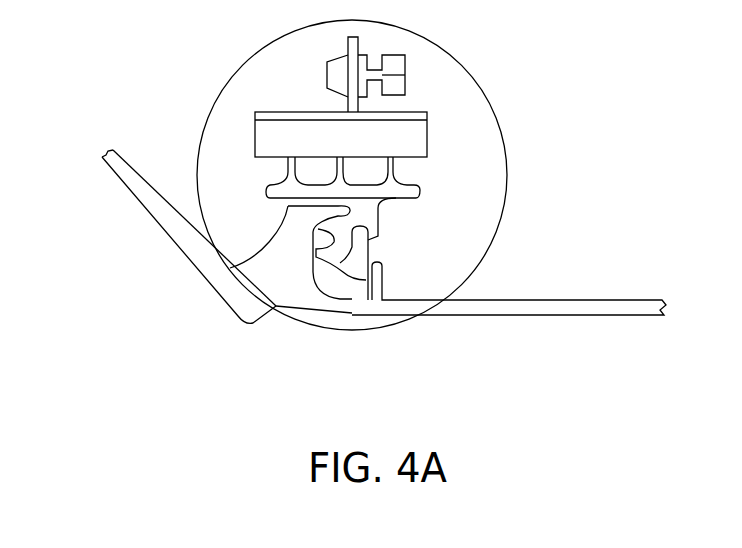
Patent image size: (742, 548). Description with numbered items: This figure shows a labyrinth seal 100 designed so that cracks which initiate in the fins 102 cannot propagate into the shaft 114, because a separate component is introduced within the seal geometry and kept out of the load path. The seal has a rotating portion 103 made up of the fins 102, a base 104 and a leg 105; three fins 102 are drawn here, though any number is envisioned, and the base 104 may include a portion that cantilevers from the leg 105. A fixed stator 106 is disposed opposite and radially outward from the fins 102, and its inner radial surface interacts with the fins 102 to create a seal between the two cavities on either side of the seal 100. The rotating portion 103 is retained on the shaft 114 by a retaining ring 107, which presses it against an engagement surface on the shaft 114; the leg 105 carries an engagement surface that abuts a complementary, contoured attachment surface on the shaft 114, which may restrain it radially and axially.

The labyrinth seal 100 is at (498, 112).
The fins 102 is at (395, 177).
The rotating portion 103 is at (258, 206).
The base 104 is at (422, 192).
The leg 105 is at (367, 212).
The stator 106 is at (405, 137).
The retaining ring 107 is at (352, 272).
The shaft 114 is at (548, 310).